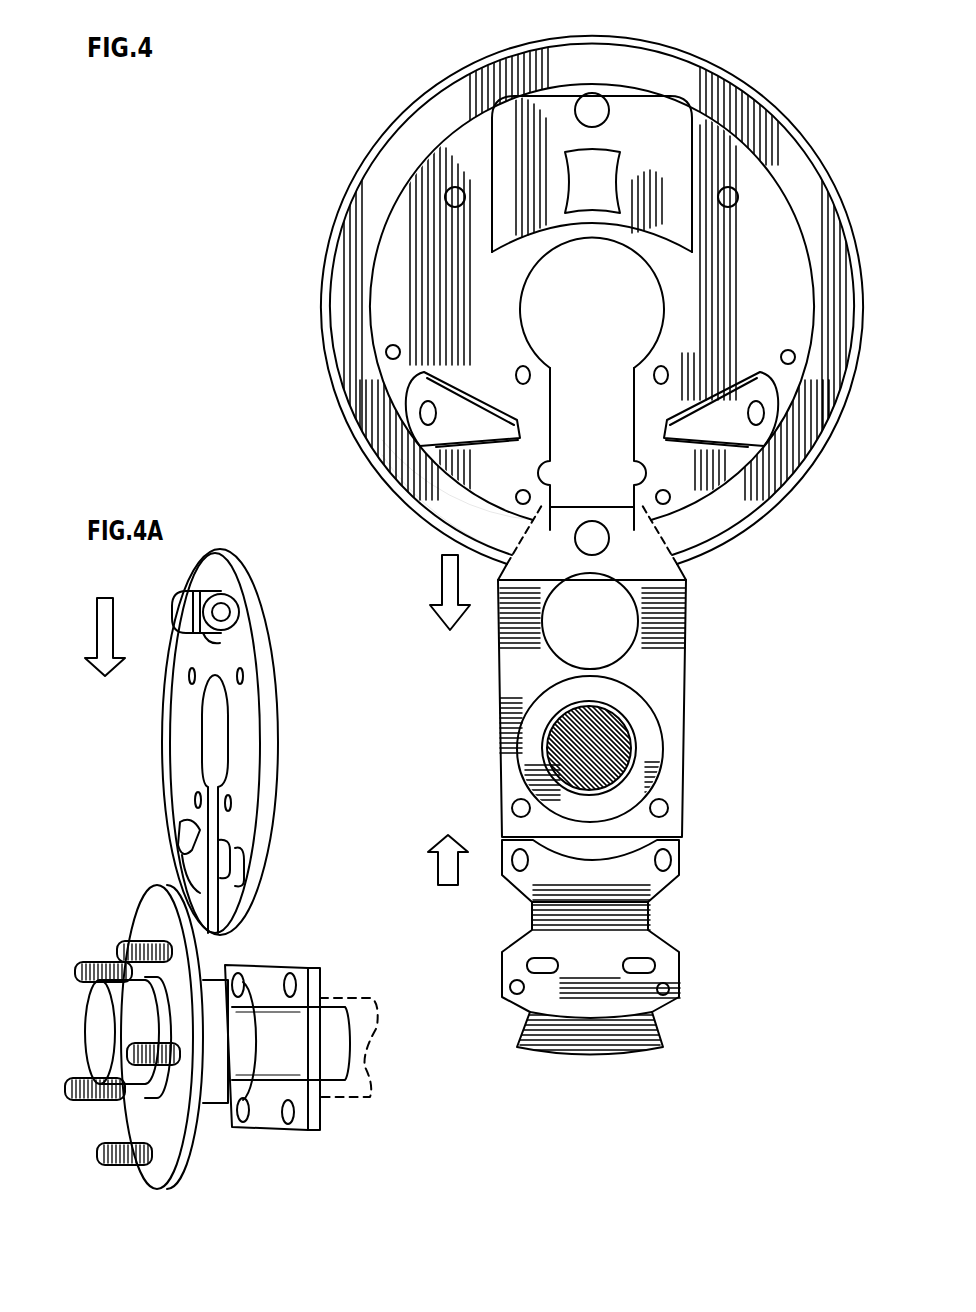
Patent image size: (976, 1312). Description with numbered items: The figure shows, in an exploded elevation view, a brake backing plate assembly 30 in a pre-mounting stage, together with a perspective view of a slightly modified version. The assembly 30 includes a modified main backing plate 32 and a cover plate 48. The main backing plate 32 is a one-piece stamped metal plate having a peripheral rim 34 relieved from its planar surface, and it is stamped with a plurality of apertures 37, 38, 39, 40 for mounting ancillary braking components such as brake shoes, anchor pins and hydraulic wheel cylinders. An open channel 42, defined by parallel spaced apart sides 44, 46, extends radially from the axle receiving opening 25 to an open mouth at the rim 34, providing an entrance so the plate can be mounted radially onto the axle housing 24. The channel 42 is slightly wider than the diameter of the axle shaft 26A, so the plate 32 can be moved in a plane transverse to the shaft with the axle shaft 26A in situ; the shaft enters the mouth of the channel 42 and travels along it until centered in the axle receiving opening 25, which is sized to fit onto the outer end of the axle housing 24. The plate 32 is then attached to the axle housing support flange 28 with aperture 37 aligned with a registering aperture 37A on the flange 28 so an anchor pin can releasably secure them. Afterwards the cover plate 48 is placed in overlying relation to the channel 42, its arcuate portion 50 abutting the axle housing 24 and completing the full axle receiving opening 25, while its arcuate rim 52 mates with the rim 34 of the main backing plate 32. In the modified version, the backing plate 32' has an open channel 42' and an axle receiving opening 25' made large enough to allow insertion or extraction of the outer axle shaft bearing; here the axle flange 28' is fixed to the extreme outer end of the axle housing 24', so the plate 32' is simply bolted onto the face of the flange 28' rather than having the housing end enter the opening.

In FIG. 4, the backing plate assembly 30 is at (366, 103).
In FIG. 4, the main backing plate 32 is at (602, 295).
In FIG. 4, the peripheral rim 34 is at (418, 486).
In FIG. 4, the aperture 37 is at (597, 112).
In FIG. 4, the registering aperture 37A is at (598, 543).
In FIG. 4, the aperture 38 is at (598, 178).
In FIG. 4, the aperture 39 is at (786, 351).
In FIG. 4, the aperture 40 is at (427, 411).
In FIG. 4, the open channel 42 is at (527, 385).
In FIG. 4, the side of open channel 44 is at (552, 425).
In FIG. 4, the side of open channel 46 is at (632, 450).
In FIG. 4, the axle receiving opening 25 is at (562, 384).
In FIG. 4, the axle housing support flange 28 is at (633, 671).
In FIG. 4, the axle housing 24 is at (643, 749).
In FIG. 4, the axle shaft 26A is at (598, 753).
In FIG. 4, the arcuate portion 50 is at (618, 850).
In FIG. 4, the cover plate 48 is at (640, 955).
In FIG. 4, the arcuate rim 52 is at (653, 1030).
In FIG. 4A, the modified backing plate 32' is at (251, 742).
In FIG. 4A, the axle receiving opening 25' is at (151, 804).
In FIG. 4A, the open channel 42' is at (156, 742).
In FIG. 4A, the axle flange 28' is at (320, 1045).
In FIG. 4A, the axle housing 24' is at (324, 1069).